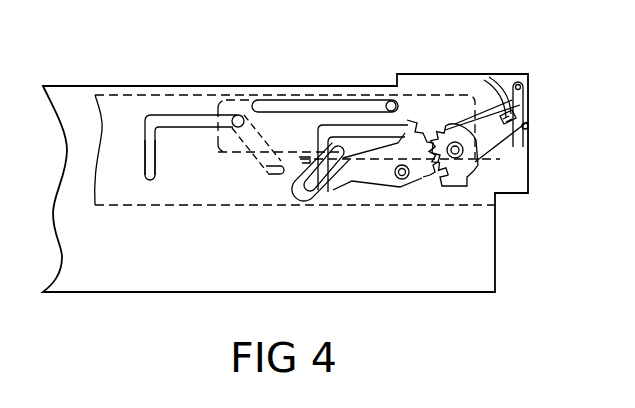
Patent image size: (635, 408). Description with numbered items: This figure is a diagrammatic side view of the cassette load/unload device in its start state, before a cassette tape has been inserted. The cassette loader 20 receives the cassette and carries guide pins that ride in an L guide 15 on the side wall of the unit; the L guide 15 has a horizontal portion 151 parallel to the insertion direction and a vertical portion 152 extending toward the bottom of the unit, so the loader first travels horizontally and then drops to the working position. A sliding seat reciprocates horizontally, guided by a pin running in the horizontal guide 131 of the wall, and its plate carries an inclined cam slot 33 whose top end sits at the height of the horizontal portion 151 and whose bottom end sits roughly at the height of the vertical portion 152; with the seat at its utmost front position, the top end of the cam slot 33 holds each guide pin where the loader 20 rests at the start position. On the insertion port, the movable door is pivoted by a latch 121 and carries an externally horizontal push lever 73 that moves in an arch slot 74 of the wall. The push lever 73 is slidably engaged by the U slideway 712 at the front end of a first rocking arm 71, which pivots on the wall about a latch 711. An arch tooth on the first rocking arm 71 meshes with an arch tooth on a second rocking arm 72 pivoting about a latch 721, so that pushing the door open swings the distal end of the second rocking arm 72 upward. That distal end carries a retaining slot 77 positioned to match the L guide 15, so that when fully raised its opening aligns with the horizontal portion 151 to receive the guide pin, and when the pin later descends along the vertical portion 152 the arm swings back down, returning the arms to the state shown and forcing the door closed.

The cassette loader 20 is at (445, 103).
The horizontal guide 131 is at (288, 87).
The horizontal portion 151 is at (165, 88).
The vertical portion 152 is at (147, 160).
The cam slot 33 is at (252, 177).
The L guide 15 is at (357, 128).
The retaining slot 77 is at (330, 183).
The second rocking arm 72 is at (367, 180).
The latch 721 is at (403, 180).
The latch 711 is at (468, 170).
The first rocking arm 71 is at (525, 165).
The arch slot 74 is at (492, 92).
The latch 121 is at (518, 80).
The push lever 73 is at (528, 110).
The U slideway 712 is at (530, 130).